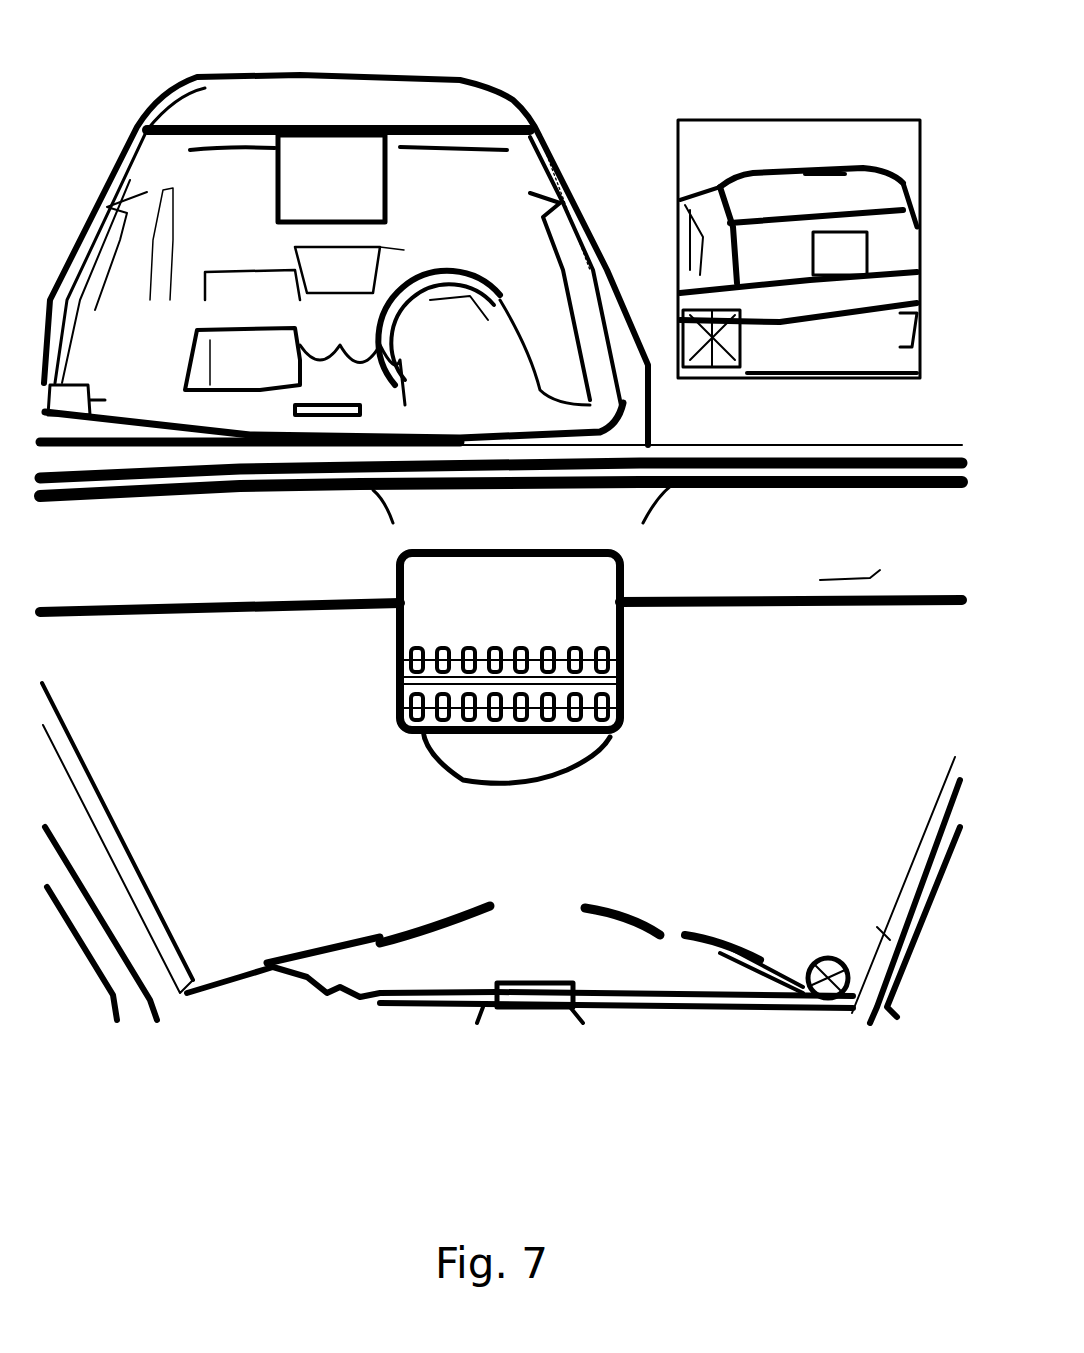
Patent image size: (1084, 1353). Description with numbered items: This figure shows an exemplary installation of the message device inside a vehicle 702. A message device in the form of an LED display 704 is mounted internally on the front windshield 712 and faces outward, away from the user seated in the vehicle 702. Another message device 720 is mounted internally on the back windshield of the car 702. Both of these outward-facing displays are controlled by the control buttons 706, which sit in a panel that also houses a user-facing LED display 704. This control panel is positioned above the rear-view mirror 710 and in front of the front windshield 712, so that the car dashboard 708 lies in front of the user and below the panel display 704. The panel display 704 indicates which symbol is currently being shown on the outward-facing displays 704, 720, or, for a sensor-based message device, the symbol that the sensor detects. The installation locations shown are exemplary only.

The vehicle 702 is at (487, 90).
The LED display 704 is at (390, 200).
The control buttons 706 is at (615, 705).
The car dashboard 708 is at (640, 1015).
The rear-view mirror 710 is at (565, 762).
The front windshield 712 is at (325, 792).
The message device 720 is at (830, 283).